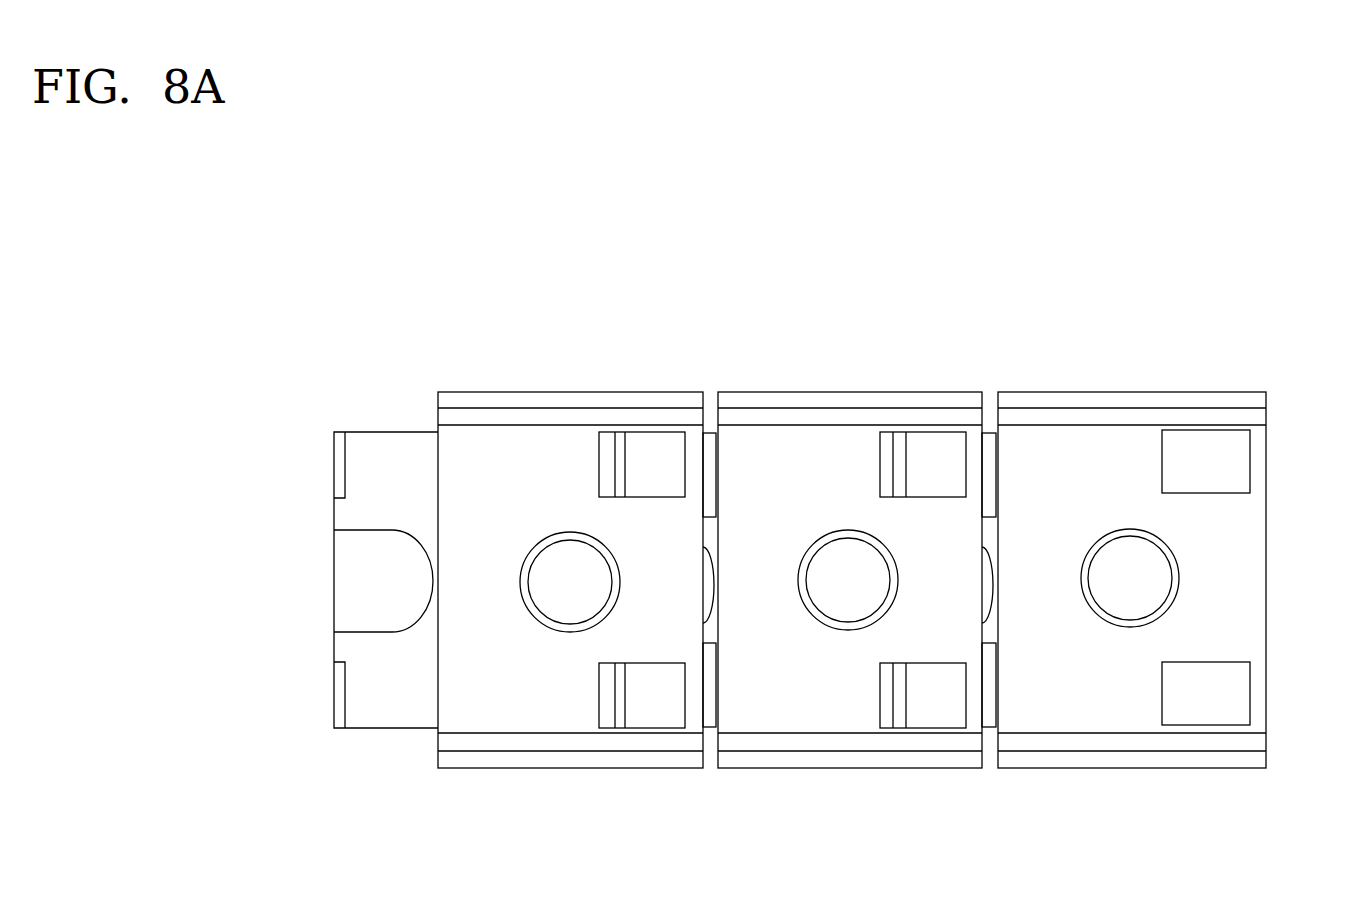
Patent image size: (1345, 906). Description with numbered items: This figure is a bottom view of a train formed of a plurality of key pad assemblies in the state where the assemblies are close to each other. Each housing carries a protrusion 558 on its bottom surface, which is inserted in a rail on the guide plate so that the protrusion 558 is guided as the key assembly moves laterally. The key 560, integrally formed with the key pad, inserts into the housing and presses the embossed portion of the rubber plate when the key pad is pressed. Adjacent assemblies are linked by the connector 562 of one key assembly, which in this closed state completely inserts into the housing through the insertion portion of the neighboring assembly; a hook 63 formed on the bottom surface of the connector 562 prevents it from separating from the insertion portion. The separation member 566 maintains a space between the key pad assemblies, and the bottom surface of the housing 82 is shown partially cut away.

The protrusion 558 is at (482, 417).
The connector 562 is at (373, 505).
The separation member 566 is at (710, 452).
The bottom surface of the housing 82 is at (657, 443).
The hook 63 is at (340, 480).
The key 560 is at (877, 607).